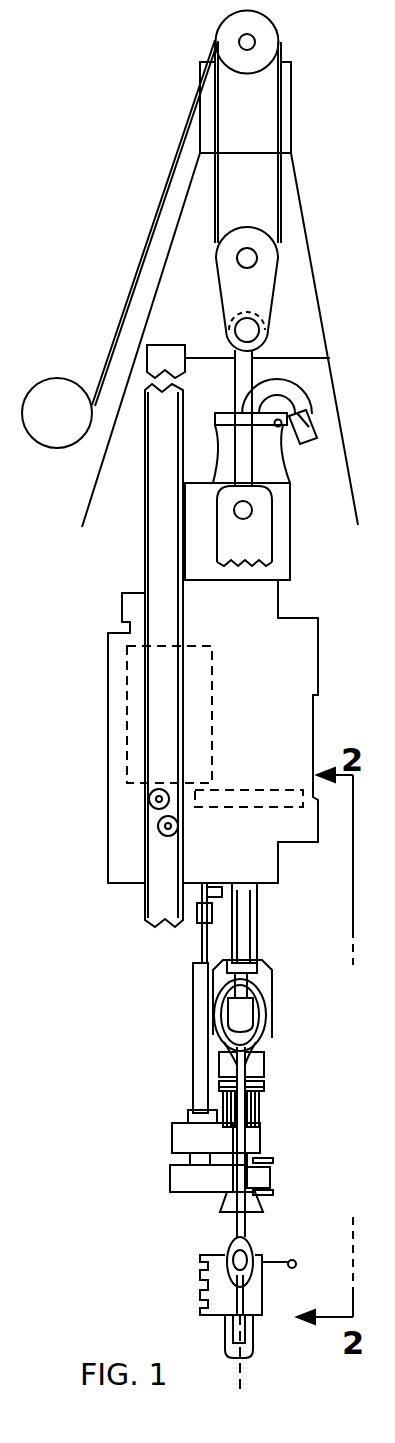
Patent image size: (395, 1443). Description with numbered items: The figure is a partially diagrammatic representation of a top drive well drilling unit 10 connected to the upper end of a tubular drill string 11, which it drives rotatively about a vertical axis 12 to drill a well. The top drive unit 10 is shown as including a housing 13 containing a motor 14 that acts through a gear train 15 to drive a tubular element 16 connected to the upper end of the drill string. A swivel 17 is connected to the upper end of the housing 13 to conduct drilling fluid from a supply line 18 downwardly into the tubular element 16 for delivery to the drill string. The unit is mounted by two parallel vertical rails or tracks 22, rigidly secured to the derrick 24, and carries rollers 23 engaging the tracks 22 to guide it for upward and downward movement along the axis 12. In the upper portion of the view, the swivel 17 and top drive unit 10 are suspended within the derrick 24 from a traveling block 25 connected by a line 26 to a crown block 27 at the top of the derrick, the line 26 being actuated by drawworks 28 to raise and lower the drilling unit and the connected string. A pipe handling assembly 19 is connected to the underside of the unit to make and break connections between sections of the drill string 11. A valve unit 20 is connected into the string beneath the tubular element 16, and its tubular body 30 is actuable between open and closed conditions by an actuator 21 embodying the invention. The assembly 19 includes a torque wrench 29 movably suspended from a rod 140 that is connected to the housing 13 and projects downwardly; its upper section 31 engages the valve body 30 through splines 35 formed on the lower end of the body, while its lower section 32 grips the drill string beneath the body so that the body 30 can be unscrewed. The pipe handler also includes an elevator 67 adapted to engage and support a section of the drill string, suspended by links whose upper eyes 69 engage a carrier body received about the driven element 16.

The top drive well drilling unit 10 is at (92, 691).
The tubular drill string 11 is at (250, 1320).
The axis 12 is at (240, 1378).
The housing 13 is at (304, 617).
The motor 14 is at (127, 715).
The gear train 15 is at (249, 790).
The tubular element 16 is at (258, 902).
The swivel 17 is at (291, 496).
The supply line 18 is at (312, 428).
The pipe handling assembly 19 is at (152, 1066).
The valve unit 20 is at (265, 1094).
The actuator 21 is at (276, 1052).
The vertical rails or tracks 22 is at (150, 594).
The rollers 23 is at (160, 820).
The derrick 24 is at (310, 228).
The traveling block 25 is at (278, 278).
The line 26 is at (216, 176).
The crown block 27 is at (280, 45).
The drawworks 28 is at (57, 378).
The torque wrench 29 is at (172, 1135).
The tubular body 30 is at (225, 1089).
The upper section 31 is at (260, 1140).
The lower section 32 is at (270, 1180).
The splines 35 is at (256, 1112).
The elevator 67 is at (200, 1286).
The second eyes 69 is at (258, 1005).
The rod 140 is at (202, 937).